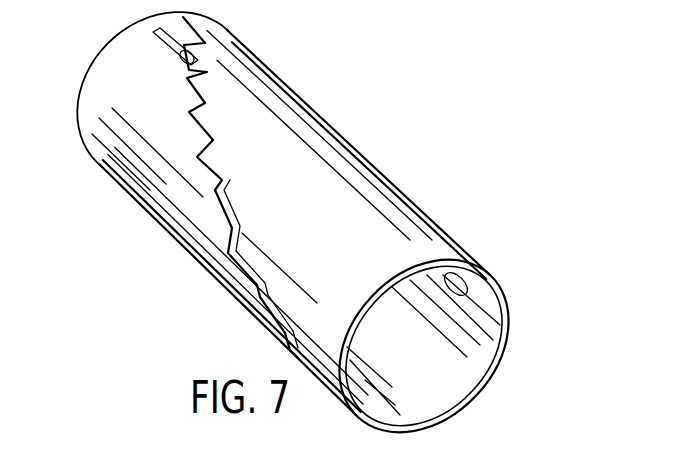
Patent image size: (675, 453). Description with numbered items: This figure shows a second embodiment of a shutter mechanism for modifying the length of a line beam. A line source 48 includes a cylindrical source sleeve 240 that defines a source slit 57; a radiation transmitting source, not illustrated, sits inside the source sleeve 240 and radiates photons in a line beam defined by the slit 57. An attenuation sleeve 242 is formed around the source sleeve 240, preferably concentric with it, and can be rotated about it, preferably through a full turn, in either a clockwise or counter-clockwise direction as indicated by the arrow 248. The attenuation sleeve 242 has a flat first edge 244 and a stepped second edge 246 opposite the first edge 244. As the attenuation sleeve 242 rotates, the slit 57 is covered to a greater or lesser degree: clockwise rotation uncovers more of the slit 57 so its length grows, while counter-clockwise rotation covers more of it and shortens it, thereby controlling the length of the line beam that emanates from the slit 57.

The line source 48 is at (153, 113).
The source slit 57 is at (186, 62).
The source sleeve 240 is at (152, 173).
The attenuation sleeve 242 is at (280, 144).
The flat first edge 244 is at (468, 296).
The stepped second edge 246 is at (197, 103).
The arrow 248 is at (380, 237).